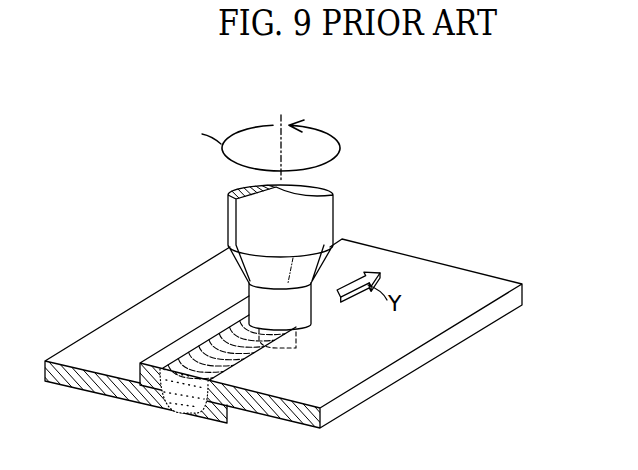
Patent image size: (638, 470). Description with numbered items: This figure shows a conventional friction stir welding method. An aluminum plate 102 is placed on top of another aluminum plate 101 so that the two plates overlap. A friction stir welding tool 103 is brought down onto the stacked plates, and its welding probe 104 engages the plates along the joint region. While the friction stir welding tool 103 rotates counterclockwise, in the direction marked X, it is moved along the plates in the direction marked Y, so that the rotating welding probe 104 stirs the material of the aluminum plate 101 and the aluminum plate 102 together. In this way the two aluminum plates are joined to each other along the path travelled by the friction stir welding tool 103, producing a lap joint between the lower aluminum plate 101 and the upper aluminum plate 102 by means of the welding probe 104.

The aluminum plate 101 is at (122, 334).
The aluminum plate 102 is at (457, 277).
The friction stir welding tool 103 is at (366, 191).
The welding probe 104 is at (287, 352).